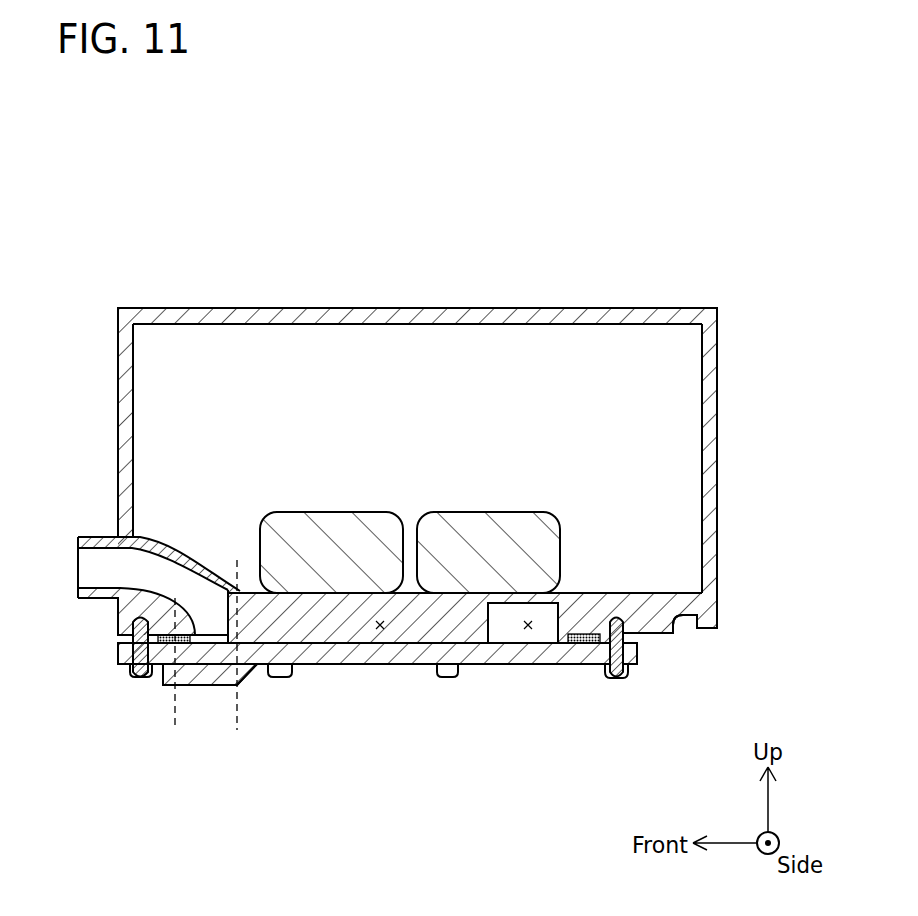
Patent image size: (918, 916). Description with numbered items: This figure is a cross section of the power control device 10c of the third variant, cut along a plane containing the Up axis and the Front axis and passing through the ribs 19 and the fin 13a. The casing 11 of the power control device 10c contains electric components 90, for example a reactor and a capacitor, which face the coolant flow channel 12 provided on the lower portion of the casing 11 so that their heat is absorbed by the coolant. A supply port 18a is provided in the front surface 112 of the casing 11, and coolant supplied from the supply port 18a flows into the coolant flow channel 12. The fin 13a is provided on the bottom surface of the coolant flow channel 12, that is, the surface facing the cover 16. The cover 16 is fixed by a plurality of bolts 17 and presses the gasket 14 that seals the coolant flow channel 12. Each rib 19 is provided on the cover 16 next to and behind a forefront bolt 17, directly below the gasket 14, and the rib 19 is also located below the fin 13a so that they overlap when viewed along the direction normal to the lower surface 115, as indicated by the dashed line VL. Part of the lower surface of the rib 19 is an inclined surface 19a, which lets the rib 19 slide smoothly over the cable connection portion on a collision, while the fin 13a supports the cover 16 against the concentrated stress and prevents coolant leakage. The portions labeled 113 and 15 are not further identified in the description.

The power control device 10c is at (115, 257).
The casing 11 is at (318, 318).
The front surface 112 is at (89, 383).
The right side wall of housing 113 is at (746, 389).
The electric components 90 is at (343, 532).
The supply port 18a is at (95, 542).
The fin 13a is at (375, 630).
The coolant flow channel 12 is at (525, 630).
The gasket 14 is at (556, 645).
The cover 16 is at (493, 664).
The notch 15 is at (690, 617).
The lower surface 115 is at (664, 644).
The bolts 17 is at (143, 673).
The rib 19 is at (163, 675).
The inclined surface 19a is at (237, 685).
The dashed line VL is at (237, 703).